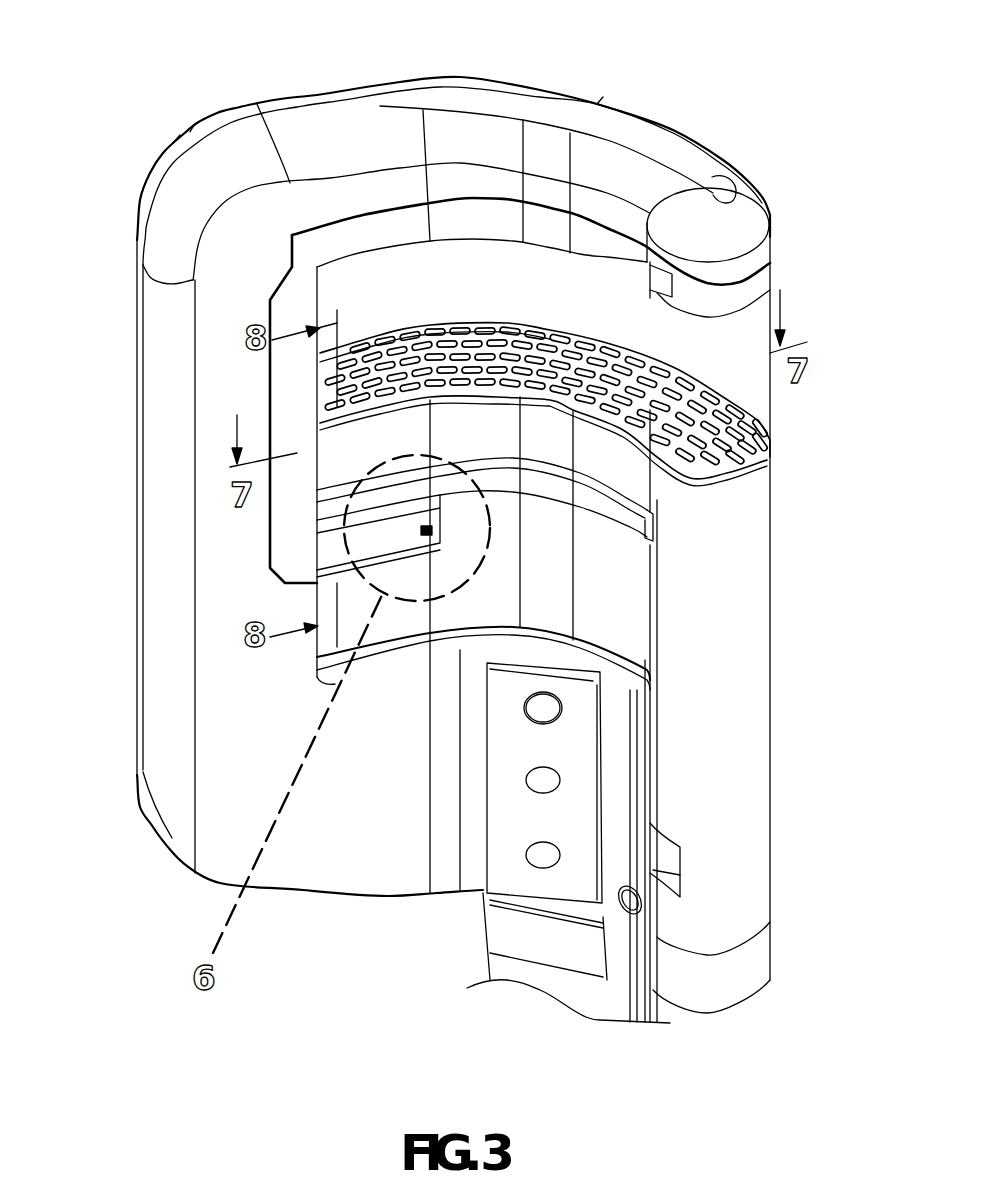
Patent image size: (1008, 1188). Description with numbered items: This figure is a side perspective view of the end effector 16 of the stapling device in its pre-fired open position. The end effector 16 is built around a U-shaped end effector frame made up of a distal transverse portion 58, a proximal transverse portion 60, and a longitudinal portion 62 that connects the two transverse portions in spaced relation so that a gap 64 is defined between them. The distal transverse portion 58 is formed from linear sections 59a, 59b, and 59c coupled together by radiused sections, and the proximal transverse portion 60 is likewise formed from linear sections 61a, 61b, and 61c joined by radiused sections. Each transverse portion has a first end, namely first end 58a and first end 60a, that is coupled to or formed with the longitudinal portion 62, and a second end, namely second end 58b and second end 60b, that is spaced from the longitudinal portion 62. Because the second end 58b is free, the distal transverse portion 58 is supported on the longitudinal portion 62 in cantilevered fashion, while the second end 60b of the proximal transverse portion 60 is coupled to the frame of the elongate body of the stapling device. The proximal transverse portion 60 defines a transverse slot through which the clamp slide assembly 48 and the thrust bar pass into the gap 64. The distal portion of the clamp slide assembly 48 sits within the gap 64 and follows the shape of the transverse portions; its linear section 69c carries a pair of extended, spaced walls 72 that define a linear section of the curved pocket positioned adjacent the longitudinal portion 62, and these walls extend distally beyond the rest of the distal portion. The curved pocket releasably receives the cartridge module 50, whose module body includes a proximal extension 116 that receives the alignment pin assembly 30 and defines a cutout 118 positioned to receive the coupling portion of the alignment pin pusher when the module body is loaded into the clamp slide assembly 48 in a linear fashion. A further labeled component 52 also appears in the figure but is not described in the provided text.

The end effector 16 is at (93, 184).
The distal transverse portion 58 is at (450, 97).
The first end of distal transverse portion 58a is at (283, 120).
The second end of distal transverse portion 58b is at (727, 203).
The linear section 59a is at (683, 160).
The linear section 59b is at (555, 110).
The linear section 59c is at (335, 110).
The gap 64 is at (526, 299).
The lid 52 is at (541, 226).
The longitudinal portion 62 is at (183, 533).
The cartridge module 50 is at (780, 436).
The alignment pin assembly 30 is at (733, 423).
The linear section 69c is at (307, 514).
The spaced walls 72 is at (330, 530).
The linear section 61b is at (537, 647).
The clamp slide assembly 48 is at (636, 610).
The proximal extension 116 is at (745, 653).
The linear section 61a is at (632, 783).
The cutout 118 is at (667, 870).
The first end of proximal transverse portion 60a is at (305, 743).
The linear section 61c is at (347, 810).
The proximal transverse portion 60 is at (440, 863).
The second end of proximal transverse portion 60b is at (637, 840).